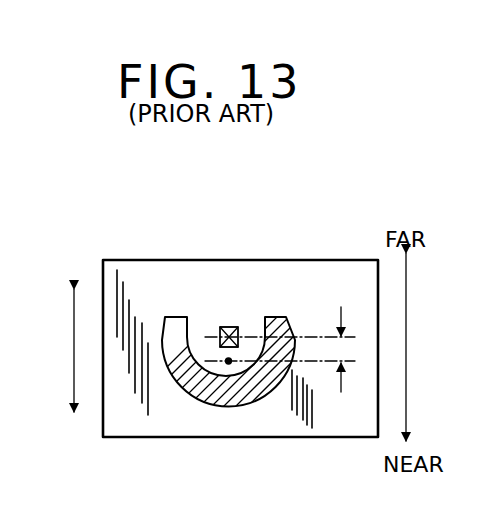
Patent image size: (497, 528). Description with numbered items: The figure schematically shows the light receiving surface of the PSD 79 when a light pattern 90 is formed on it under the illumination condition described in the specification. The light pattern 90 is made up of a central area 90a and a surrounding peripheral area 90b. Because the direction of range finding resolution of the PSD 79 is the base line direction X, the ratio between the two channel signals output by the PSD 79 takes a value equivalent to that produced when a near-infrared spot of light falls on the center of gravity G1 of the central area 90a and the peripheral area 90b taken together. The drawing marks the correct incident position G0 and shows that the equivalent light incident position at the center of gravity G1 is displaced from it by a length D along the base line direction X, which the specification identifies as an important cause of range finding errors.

The PSD 79 is at (170, 420).
The light pattern 90 is at (327, 218).
The central area 90a is at (231, 327).
The peripheral area 90b is at (279, 317).
The center of main spot G0 is at (224, 328).
The center of gravity G1 is at (229, 362).
The length D is at (280, 365).
The base line direction X is at (72, 347).